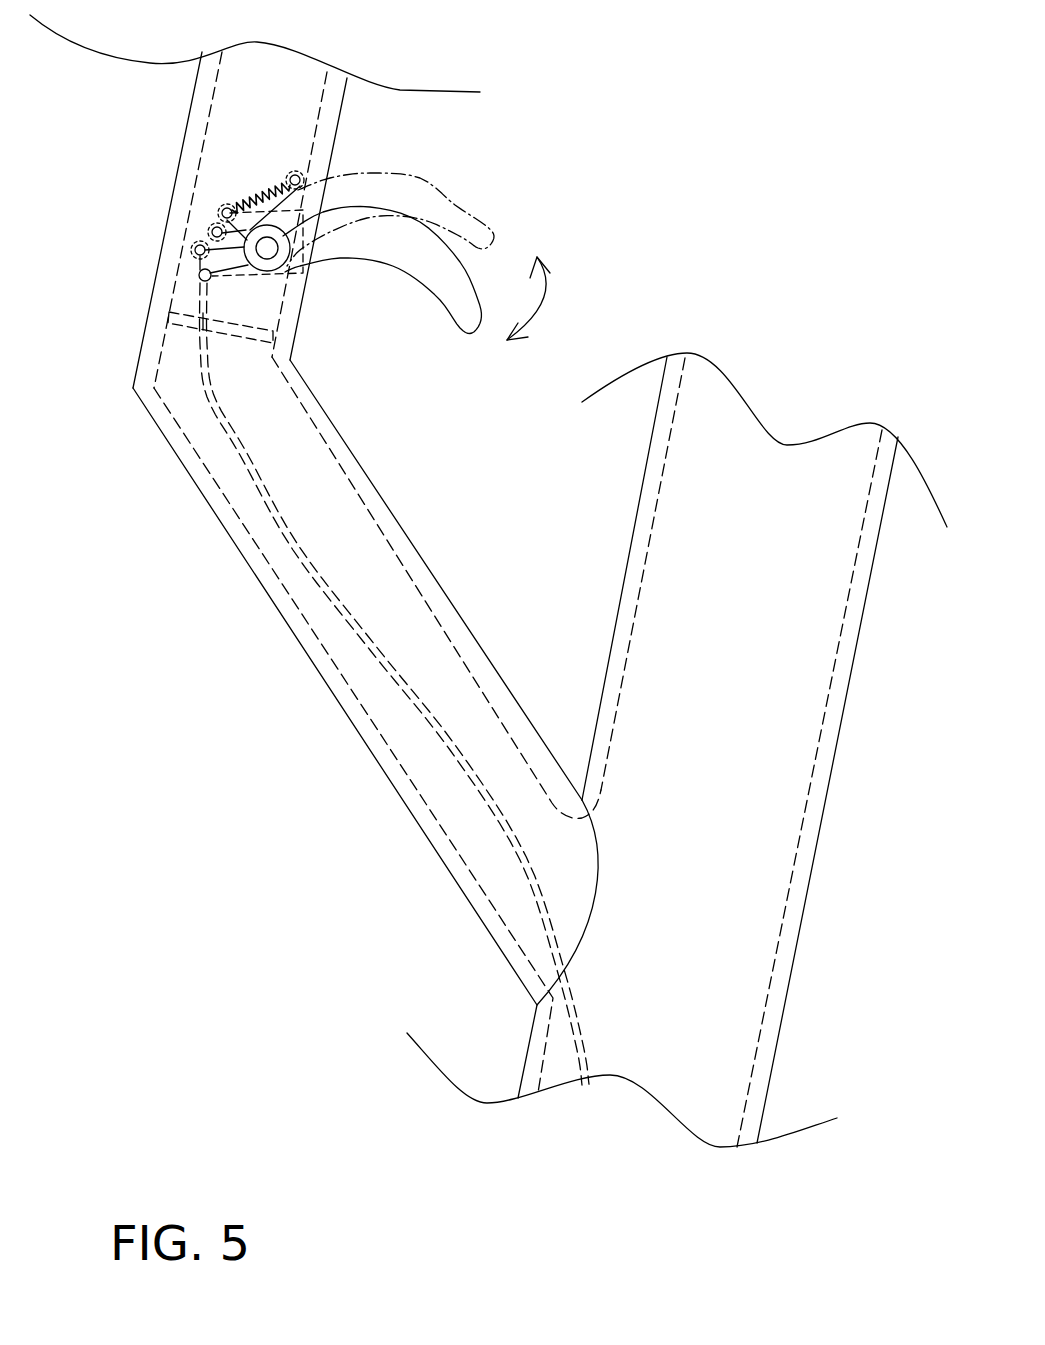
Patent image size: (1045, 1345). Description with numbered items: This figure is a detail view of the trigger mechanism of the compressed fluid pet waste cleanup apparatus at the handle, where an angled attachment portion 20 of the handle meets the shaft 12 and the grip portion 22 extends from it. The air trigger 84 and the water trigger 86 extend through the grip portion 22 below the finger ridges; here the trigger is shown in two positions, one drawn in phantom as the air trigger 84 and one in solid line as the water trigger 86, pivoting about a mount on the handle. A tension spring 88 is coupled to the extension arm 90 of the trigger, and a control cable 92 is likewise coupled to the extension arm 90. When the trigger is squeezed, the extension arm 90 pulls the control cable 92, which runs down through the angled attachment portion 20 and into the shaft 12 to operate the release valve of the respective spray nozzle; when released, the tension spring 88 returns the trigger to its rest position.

The shaft 12 is at (812, 847).
The angled attachment portion 20 is at (323, 675).
The grip portion 22 is at (180, 163).
The air trigger 84 is at (428, 197).
The water trigger 86 is at (380, 264).
The tension spring 88 is at (267, 192).
The extension arm 90 is at (230, 275).
The control cable 92 is at (207, 397).